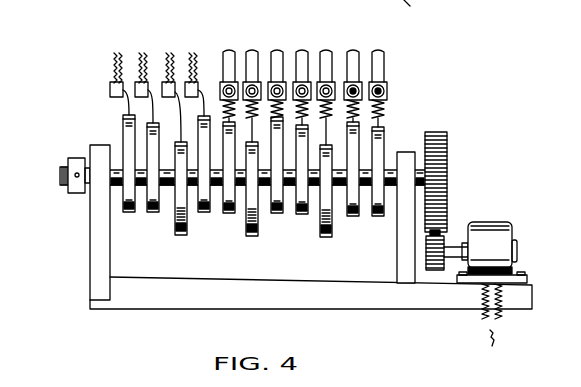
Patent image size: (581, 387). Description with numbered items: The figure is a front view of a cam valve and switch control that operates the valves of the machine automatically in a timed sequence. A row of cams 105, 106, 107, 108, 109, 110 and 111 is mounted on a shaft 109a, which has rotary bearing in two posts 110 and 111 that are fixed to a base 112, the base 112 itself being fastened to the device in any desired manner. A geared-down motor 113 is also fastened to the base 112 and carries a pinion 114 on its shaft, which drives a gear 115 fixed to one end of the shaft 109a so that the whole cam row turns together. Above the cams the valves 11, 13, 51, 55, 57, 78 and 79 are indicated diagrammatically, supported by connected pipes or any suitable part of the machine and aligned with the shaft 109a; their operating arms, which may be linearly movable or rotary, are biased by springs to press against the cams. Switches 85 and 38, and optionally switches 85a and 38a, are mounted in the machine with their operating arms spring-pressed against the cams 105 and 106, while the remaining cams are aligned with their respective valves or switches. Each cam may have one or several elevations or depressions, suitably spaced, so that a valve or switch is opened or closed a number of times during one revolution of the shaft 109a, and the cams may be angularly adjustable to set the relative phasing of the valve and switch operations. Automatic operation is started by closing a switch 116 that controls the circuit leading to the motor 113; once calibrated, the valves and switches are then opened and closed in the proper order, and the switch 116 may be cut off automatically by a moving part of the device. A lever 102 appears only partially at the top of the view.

The switch 85a is at (124, 80).
The switch 85 is at (181, 140).
The switch 38a is at (150, 80).
The switch 38 is at (203, 80).
The valve 11 is at (235, 81).
The valve 13 is at (257, 80).
The valve 51 is at (285, 81).
The valve 55 is at (307, 80).
The valve 57 is at (333, 81).
The valve 78 is at (363, 84).
The valve 79 is at (388, 89).
The lever 102 is at (419, 8).
The shaft 109a is at (118, 167).
The cam 105 is at (180, 236).
The cam 106 is at (204, 213).
The cam 107 is at (229, 214).
The cam 108 is at (252, 237).
The cam 109 is at (276, 214).
The post 110 is at (90, 250).
The post 111 is at (405, 275).
The base 112 is at (303, 292).
The geared-down motor 113 is at (510, 230).
The pinion 114 is at (442, 240).
The gear 115 is at (438, 131).
The switch 116 is at (483, 327).